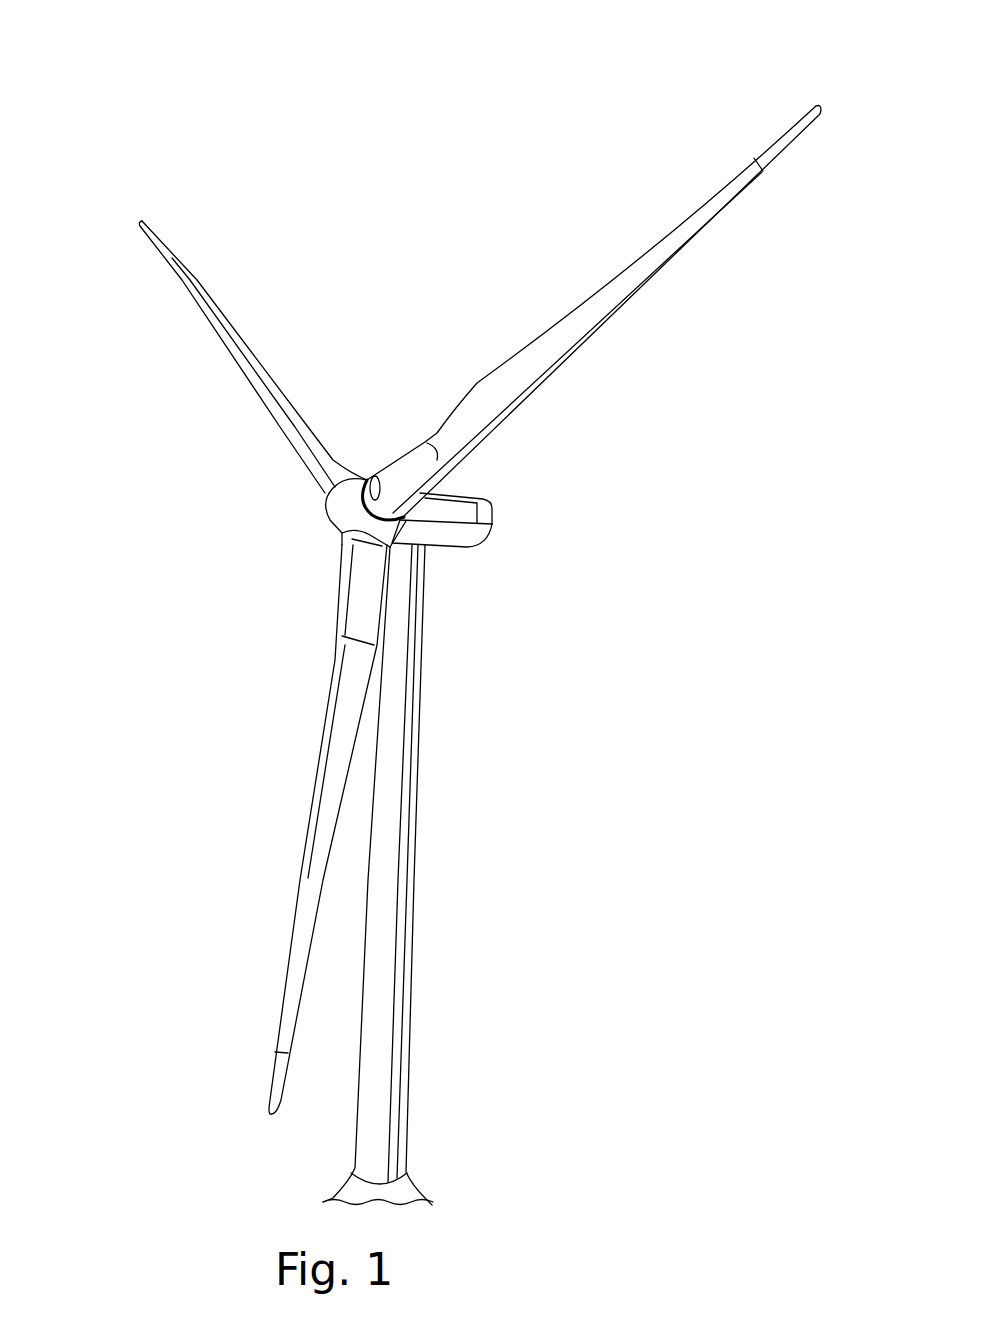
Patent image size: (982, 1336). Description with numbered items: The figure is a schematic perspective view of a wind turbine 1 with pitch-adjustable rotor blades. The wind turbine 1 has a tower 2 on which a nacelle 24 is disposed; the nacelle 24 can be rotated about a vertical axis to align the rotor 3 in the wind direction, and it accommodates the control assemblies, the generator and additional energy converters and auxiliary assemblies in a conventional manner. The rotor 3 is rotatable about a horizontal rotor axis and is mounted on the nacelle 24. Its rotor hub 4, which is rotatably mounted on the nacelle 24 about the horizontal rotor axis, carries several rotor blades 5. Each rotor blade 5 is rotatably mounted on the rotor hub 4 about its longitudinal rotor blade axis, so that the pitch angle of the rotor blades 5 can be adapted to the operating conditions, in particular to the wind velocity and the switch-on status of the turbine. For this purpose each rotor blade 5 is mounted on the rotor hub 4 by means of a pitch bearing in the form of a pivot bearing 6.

The wind turbine 1 is at (192, 575).
The tower 2 is at (407, 885).
The rotor 3 is at (502, 586).
The rotor hub 4 is at (318, 498).
The rotor blade 5 is at (663, 270).
The pivot bearing 6 is at (373, 480).
The nacelle 24 is at (447, 535).